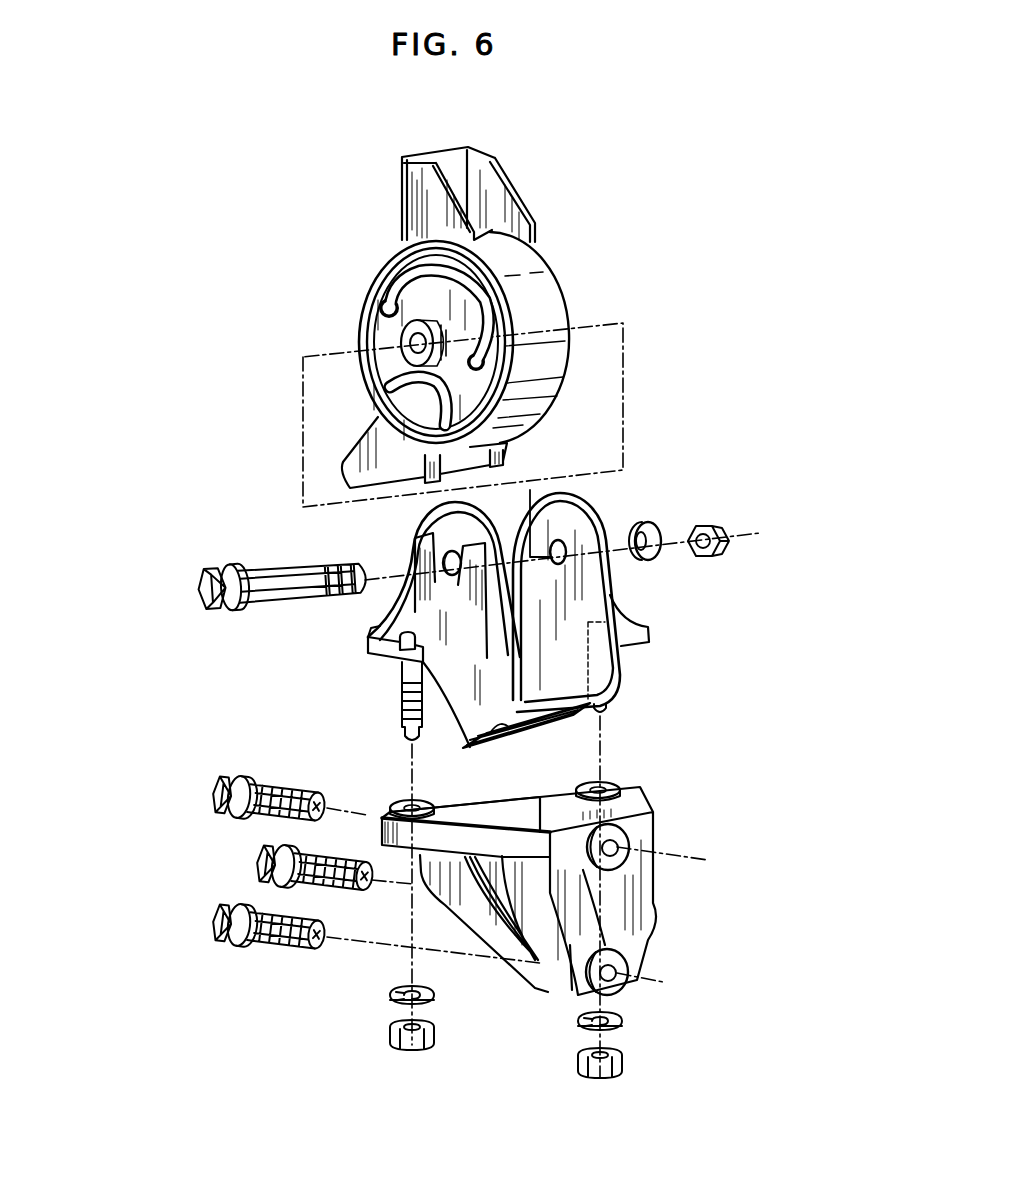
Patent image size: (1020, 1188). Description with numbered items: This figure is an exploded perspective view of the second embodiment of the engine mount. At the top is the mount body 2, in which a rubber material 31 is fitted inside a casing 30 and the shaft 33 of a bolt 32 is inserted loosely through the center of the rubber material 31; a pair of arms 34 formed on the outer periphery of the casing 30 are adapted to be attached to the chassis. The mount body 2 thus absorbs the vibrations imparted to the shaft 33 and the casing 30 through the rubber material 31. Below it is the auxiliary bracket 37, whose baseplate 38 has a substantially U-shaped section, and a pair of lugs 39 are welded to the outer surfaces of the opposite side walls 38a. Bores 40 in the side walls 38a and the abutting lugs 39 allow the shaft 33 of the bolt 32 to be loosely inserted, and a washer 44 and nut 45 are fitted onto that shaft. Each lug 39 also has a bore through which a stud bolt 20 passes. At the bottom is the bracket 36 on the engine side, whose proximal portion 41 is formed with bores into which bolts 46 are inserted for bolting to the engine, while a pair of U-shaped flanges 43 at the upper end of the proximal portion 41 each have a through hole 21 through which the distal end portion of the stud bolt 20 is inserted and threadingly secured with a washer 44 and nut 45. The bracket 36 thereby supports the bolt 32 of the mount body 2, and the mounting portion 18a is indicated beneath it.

The mount body 2 is at (341, 297).
The casing 30 is at (557, 290).
The rubber material 31 is at (390, 290).
The arms 34 is at (518, 205).
The baseplate 38 is at (460, 722).
The side walls 38a is at (592, 588).
The auxiliary bracket 37 is at (626, 665).
The lugs 39 is at (378, 629).
The bores 40 is at (445, 563).
The stud bolt 20 is at (399, 707).
The shaft 33 is at (282, 573).
The bolt 32 is at (201, 607).
The washer 44 is at (655, 527).
The nut 45 is at (728, 530).
The bracket 36 is at (659, 838).
The through hole 21 is at (500, 800).
The proximal portion 41 is at (654, 890).
The U-shaped flanges 43 is at (375, 822).
The bolt 46 is at (258, 858).
The body mounting portion 18a is at (577, 945).